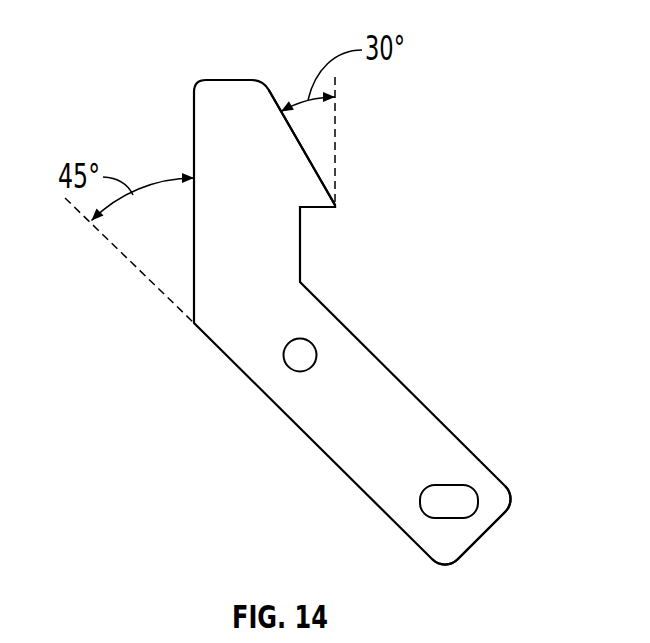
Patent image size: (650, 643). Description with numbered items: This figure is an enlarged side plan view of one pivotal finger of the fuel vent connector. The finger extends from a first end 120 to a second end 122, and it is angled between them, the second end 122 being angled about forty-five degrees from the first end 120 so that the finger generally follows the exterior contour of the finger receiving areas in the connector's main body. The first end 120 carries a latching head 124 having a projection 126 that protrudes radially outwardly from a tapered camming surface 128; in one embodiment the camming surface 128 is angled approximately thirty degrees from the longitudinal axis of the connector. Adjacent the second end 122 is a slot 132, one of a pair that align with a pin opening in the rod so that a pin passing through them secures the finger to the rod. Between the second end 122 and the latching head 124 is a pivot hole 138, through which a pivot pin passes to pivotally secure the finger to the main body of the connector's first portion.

The first end 120 is at (210, 78).
The latching head 124 is at (232, 90).
The tapered camming surface 128 is at (298, 140).
The projection 126 is at (335, 202).
The pivot hole 138 is at (287, 370).
The slot 132 is at (455, 493).
The second end 122 is at (495, 538).